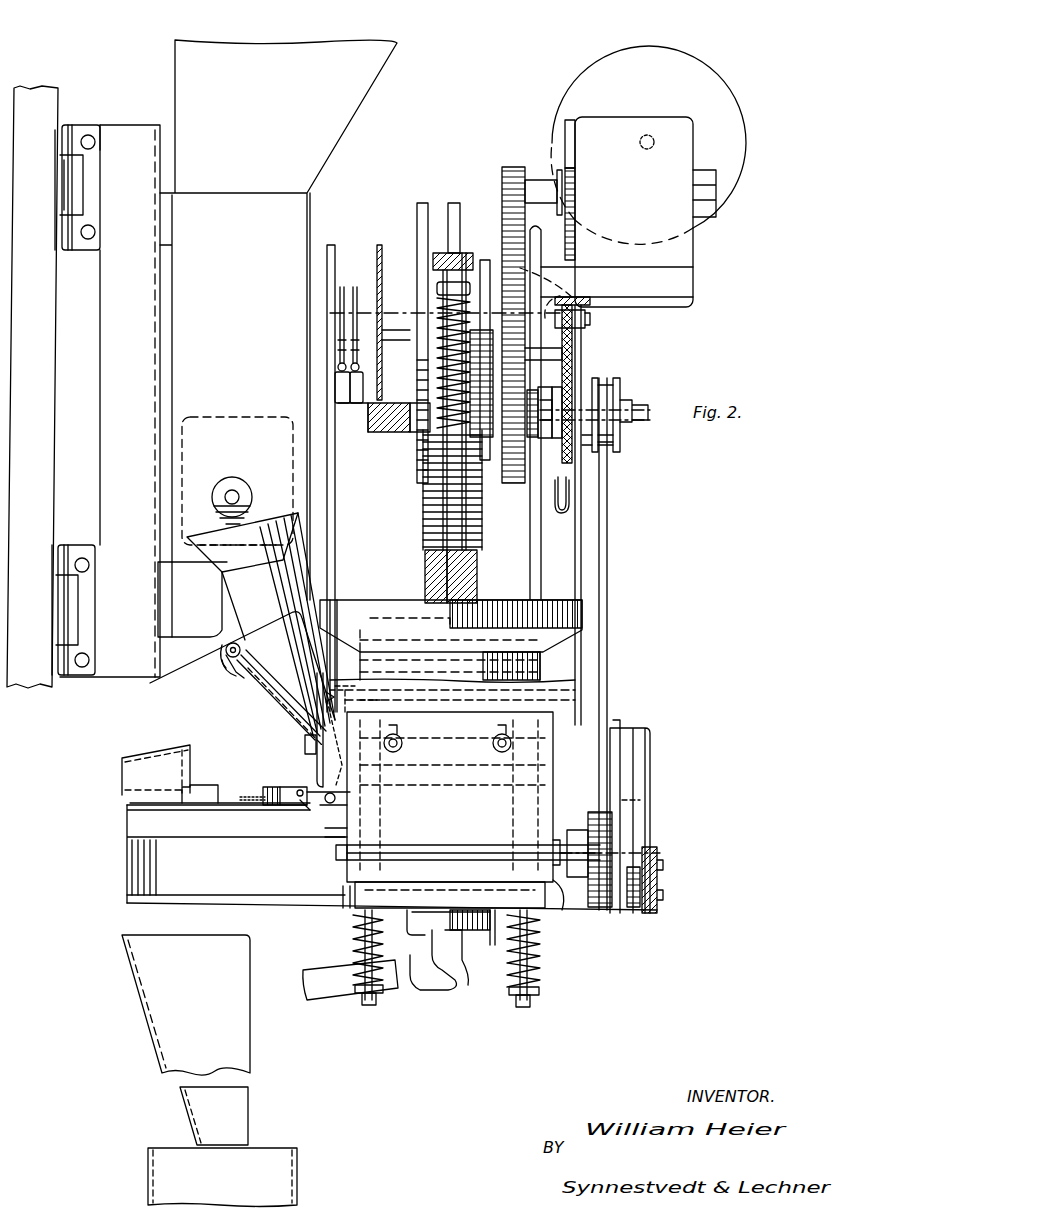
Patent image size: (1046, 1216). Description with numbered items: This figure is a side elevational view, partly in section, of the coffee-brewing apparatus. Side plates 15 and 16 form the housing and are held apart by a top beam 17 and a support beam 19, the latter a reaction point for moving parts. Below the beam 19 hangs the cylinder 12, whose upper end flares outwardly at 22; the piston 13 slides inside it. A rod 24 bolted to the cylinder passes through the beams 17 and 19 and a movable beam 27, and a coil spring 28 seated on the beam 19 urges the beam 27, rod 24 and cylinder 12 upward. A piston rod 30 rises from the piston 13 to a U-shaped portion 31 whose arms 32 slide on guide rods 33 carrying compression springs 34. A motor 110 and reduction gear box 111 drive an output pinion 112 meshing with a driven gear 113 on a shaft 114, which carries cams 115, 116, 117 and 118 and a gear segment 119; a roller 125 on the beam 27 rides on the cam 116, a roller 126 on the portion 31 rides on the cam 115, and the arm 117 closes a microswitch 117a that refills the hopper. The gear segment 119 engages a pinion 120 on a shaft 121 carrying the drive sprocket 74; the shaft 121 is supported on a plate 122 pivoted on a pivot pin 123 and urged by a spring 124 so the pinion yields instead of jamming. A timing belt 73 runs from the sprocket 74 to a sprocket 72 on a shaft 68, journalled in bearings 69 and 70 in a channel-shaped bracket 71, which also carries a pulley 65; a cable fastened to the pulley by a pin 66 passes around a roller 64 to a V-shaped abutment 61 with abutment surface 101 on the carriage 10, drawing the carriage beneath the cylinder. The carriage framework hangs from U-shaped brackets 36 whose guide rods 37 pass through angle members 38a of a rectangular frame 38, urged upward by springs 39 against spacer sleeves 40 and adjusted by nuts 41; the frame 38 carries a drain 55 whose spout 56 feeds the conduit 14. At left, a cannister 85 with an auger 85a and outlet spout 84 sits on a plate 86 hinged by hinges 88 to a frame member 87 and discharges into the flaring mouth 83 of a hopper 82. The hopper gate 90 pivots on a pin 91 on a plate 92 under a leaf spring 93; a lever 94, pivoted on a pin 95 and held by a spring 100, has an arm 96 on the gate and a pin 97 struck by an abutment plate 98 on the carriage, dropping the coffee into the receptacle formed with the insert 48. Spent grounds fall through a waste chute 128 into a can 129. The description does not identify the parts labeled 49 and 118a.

The carriage 10 is at (132, 818).
The cylinder 12 is at (545, 665).
The piston 13 is at (500, 610).
The conduit 14 is at (315, 1002).
The side plate 15 is at (582, 548).
The side plate 16 is at (560, 672).
The beam 17 is at (466, 253).
The support beam 19 is at (477, 566).
The flared upper end 22 is at (342, 642).
The rod 24 is at (455, 203).
The movable beam 27 is at (365, 418).
The coil spring 28 is at (482, 538).
The piston rod 30 is at (425, 562).
The U-shaped portion 31 is at (437, 296).
The outwardly extending arms 32 is at (437, 286).
The guide rod 33 is at (440, 258).
The compression spring 34 is at (435, 375).
The U-shaped bracket 36 is at (310, 760).
The guide rod 37 is at (352, 942).
The rectangularly shaped frame 38 is at (200, 903).
The angle member 38a is at (345, 896).
The compression spring 39 is at (352, 952).
The spacer sleeve 40 is at (388, 808).
The nut 41 is at (380, 997).
The insert 48 is at (140, 797).
The table top 49 is at (135, 806).
The drain structure 55 is at (465, 935).
The outlet spout 56 is at (440, 985).
The V-shaped abutment 61 is at (296, 812).
The roller 64 is at (640, 762).
The pulley 65 is at (656, 838).
The pin 66 is at (645, 805).
The shaft 68 is at (440, 848).
The bearing 69 is at (338, 858).
The bearing 70 is at (552, 912).
The channel-shaped bracket 71 is at (322, 838).
The sprocket 72 is at (605, 910).
The timing belt 73 is at (608, 581).
The drive sprocket 74 is at (618, 444).
The coffee hopper 82 is at (262, 676).
The flaring mouth 83 is at (205, 535).
The outlet spout 84 is at (232, 477).
The cannister 85 is at (307, 198).
The rotatable auger 85a is at (245, 487).
The plate 86 is at (150, 322).
The frame member 87 is at (40, 100).
The hinge 88 is at (70, 125).
The gate 90 is at (282, 712).
The pin 91 is at (232, 643).
The plate 92 is at (185, 640).
The leaf spring 93 is at (236, 676).
The lever 94 is at (352, 688).
The pin 95 is at (331, 698).
The arm 96 is at (266, 697).
The pin 97 is at (330, 808).
The abutment plate 98 is at (203, 785).
The spring 100 is at (352, 704).
The abutment surface 101 is at (272, 785).
The motor 110 is at (735, 120).
The reduction gear box 111 is at (695, 155).
The output pinion 112 is at (515, 167).
The driven gear 113 is at (545, 273).
The shaft 114 is at (572, 292).
The cam 115 is at (485, 260).
The cam 116 is at (422, 203).
The cam 117 is at (355, 285).
The microswitch 117a is at (352, 390).
The cam 118 is at (342, 285).
The block 118a is at (338, 378).
The gear segment 119 is at (575, 246).
The pinion 120 is at (545, 440).
The shaft 121 is at (640, 412).
The plate 122 is at (572, 370).
The pivot pin 123 is at (590, 320).
The spring 124 is at (571, 492).
The roller 125 is at (410, 445).
The roller 126 is at (490, 440).
The waste chute 128 is at (182, 1112).
The can 129 is at (148, 1170).